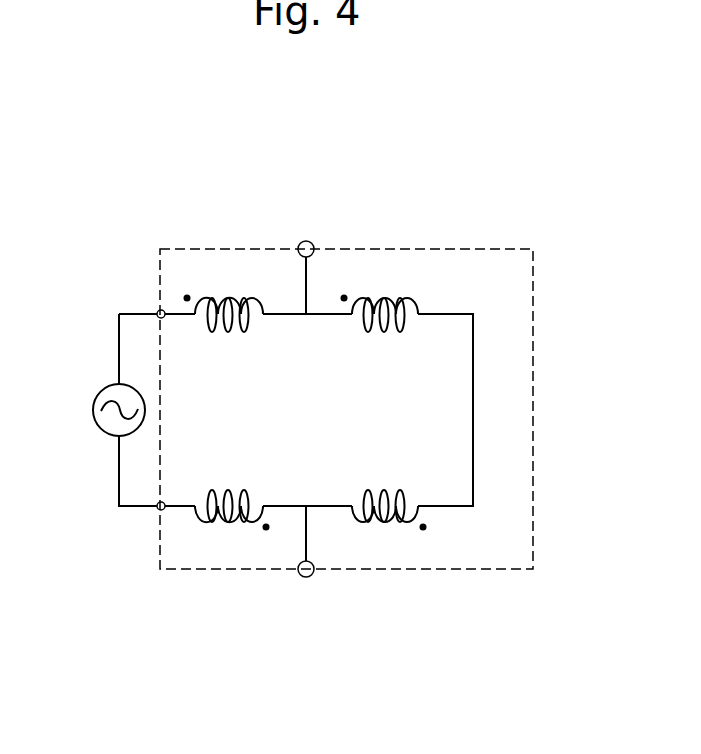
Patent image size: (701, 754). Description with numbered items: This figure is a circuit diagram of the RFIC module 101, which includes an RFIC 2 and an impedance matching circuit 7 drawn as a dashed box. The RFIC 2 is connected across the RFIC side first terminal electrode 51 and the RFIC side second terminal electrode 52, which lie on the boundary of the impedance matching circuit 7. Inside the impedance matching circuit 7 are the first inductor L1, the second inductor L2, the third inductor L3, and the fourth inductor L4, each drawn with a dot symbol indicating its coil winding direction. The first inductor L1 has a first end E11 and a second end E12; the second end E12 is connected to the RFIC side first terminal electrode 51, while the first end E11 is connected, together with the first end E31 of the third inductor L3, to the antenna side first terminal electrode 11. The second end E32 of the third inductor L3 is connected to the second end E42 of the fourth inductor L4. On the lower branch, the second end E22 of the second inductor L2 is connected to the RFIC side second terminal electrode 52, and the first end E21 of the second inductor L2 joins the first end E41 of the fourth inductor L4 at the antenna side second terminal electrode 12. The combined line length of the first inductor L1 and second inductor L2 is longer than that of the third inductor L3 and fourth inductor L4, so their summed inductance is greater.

The RFIC module 101 is at (137, 165).
The RFIC 2 is at (93, 404).
The impedance matching circuit 7 is at (533, 355).
The antenna side first terminal electrode 11 is at (306, 240).
The antenna side second terminal electrode 12 is at (307, 578).
The RFIC side first terminal electrode 51 is at (158, 311).
The RFIC side second terminal electrode 52 is at (158, 510).
The first inductor L1 is at (224, 299).
The second inductor L2 is at (232, 524).
The third inductor L3 is at (380, 299).
The fourth inductor L4 is at (389, 524).
The first end of the first inductor E11 is at (283, 313).
The second end of the first inductor E12 is at (177, 313).
The first end of the second inductor E21 is at (283, 507).
The second end of the second inductor E22 is at (173, 507).
The first end of the third inductor E31 is at (333, 313).
The second end of the third inductor E32 is at (444, 313).
The first end of the fourth inductor E41 is at (333, 507).
The second end of the fourth inductor E42 is at (444, 507).